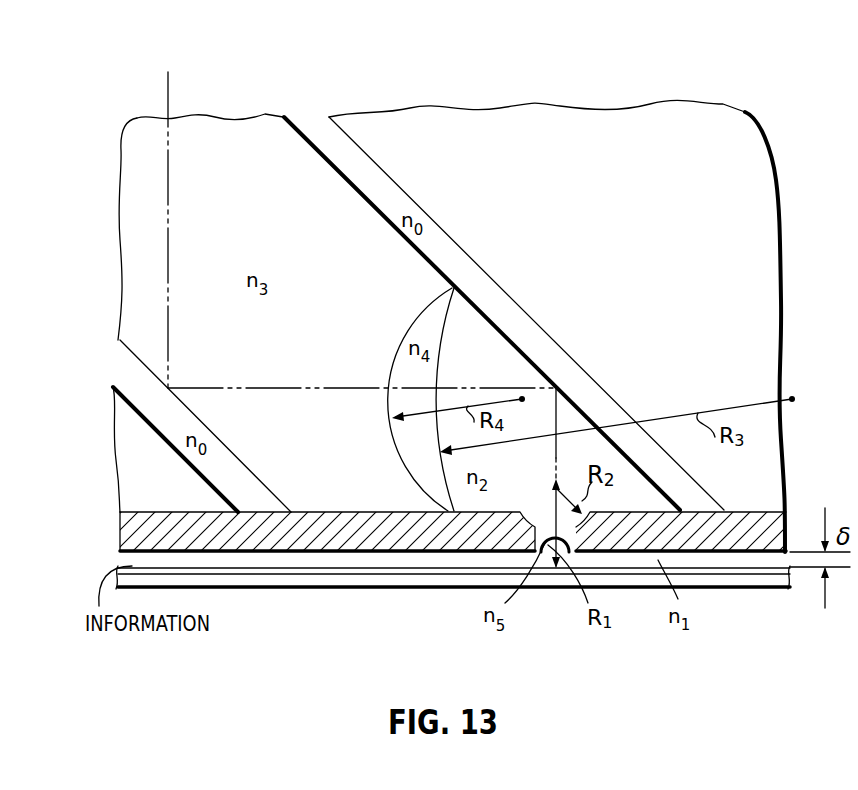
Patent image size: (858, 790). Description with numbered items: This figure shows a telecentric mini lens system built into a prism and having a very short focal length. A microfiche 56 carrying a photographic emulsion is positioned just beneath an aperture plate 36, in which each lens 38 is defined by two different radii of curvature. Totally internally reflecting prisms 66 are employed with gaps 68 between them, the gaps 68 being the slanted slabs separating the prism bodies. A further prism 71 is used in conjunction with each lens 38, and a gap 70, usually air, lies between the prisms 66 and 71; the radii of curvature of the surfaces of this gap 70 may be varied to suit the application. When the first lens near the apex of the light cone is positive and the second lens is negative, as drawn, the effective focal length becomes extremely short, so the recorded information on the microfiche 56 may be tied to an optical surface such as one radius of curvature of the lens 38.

The aperture plate 36 is at (322, 525).
The lens 38 is at (548, 528).
The microfiche 56 is at (322, 582).
The totally internally reflecting prism 66 is at (256, 189).
The gap 68 is at (319, 142).
The gap 70 is at (412, 441).
The prism 71 is at (148, 469).